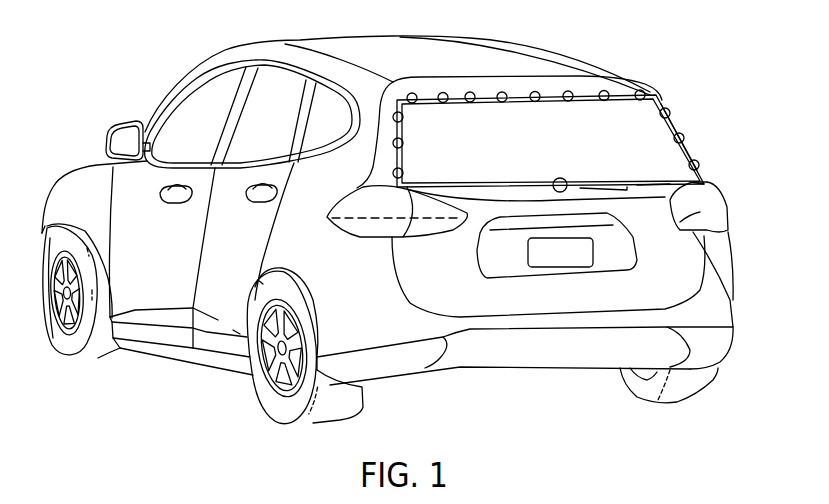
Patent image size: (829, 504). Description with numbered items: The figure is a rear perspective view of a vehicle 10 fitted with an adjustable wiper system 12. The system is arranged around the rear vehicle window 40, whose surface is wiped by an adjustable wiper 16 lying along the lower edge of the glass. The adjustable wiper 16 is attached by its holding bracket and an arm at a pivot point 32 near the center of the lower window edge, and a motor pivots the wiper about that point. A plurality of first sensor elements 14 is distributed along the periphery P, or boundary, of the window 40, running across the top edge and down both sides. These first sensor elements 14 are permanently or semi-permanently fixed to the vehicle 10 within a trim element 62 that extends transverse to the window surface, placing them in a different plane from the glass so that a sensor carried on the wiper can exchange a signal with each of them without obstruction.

The vehicle 10 is at (643, 39).
The adjustable wiper system 12 is at (703, 99).
The first sensor elements 14 is at (568, 91).
The adjustable wiper 16 is at (624, 185).
The pivot point 32 is at (555, 179).
The vehicle window 40 is at (580, 118).
The trim element 62 is at (704, 181).
The periphery P is at (676, 126).